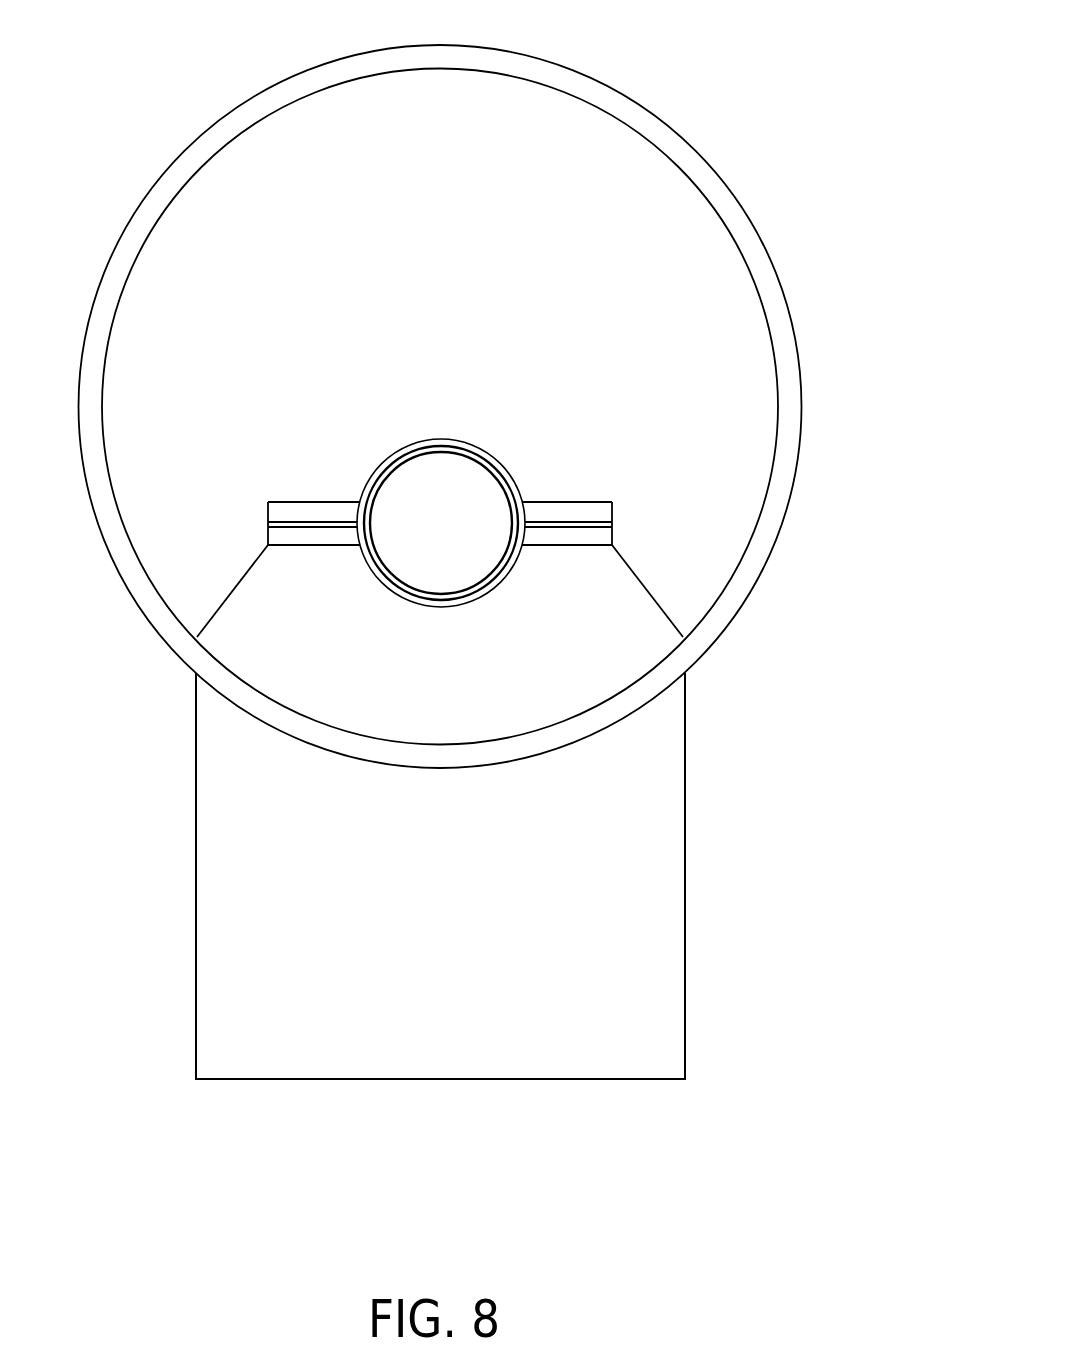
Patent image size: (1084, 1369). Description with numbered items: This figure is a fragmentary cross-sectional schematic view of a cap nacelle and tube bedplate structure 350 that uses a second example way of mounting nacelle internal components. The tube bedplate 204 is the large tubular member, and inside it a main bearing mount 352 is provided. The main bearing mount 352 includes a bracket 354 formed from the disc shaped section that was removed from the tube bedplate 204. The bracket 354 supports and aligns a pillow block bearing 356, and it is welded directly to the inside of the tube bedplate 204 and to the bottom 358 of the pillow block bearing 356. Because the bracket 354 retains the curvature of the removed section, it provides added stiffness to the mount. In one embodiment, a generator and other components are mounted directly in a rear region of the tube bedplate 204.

The cap nacelle and tube bedplate structure 350 is at (500, 387).
The tube bedplate 204 is at (802, 470).
The main bearing mount 352 is at (456, 338).
The pillow block bearing 356 is at (568, 502).
The bracket 354 is at (650, 590).
The bottom of pillow block bearing 358 is at (287, 548).